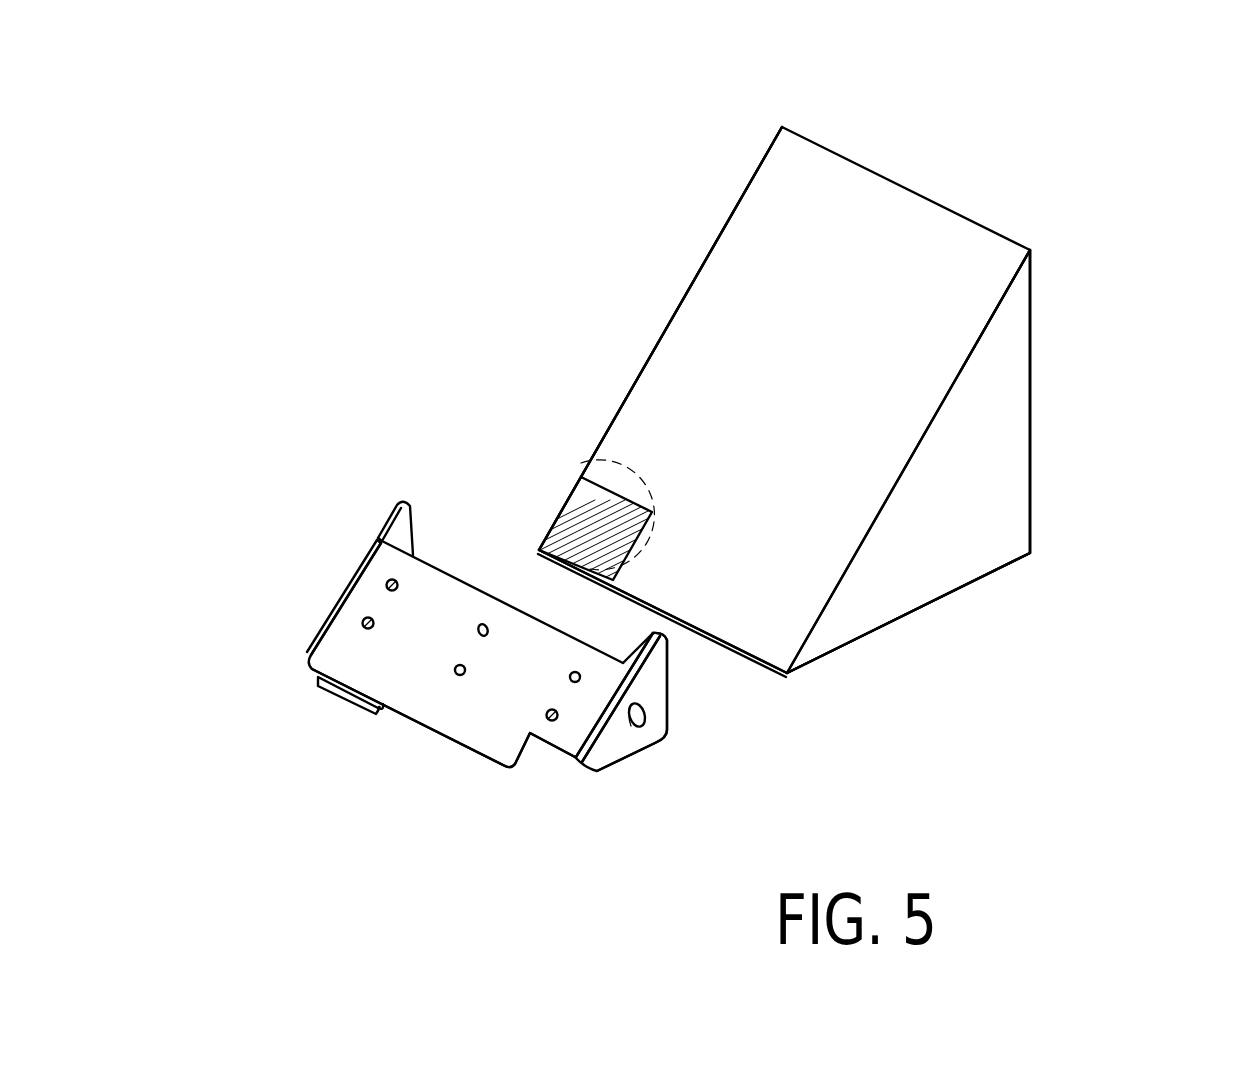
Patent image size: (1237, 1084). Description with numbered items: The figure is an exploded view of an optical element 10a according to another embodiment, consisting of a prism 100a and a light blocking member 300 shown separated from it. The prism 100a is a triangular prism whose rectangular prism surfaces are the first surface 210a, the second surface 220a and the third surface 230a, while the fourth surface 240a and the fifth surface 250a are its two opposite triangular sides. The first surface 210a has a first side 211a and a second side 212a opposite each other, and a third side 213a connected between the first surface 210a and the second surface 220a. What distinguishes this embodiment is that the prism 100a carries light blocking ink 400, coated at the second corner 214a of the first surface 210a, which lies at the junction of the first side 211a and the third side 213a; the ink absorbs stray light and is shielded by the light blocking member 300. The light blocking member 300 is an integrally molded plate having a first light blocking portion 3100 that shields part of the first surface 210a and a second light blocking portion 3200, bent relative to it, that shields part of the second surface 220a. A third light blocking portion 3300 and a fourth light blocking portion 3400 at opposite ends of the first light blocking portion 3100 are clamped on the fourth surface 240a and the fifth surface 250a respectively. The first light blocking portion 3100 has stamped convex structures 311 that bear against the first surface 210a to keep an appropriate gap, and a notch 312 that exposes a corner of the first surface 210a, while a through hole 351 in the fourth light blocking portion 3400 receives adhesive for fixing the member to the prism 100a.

The optical element 10a is at (532, 91).
The prism 100a is at (880, 222).
The first surface 210a is at (708, 357).
The first side 211a is at (718, 232).
The second side 212a is at (997, 312).
The third side 213a is at (757, 664).
The second corner 214a is at (612, 466).
The second surface 220a is at (975, 585).
The third surface 230a is at (1032, 508).
The fourth surface 240a is at (614, 405).
The fifth surface 250a is at (980, 420).
The light blocking member 300 is at (423, 731).
The convex structures 311 is at (460, 676).
The notch 312 is at (545, 768).
The through hole 351 is at (648, 712).
The light blocking ink 400 is at (582, 523).
The first light blocking portion 3100 is at (347, 647).
The second light blocking portion 3200 is at (342, 692).
The third light blocking portion 3300 is at (382, 518).
The fourth light blocking portion 3400 is at (625, 745).